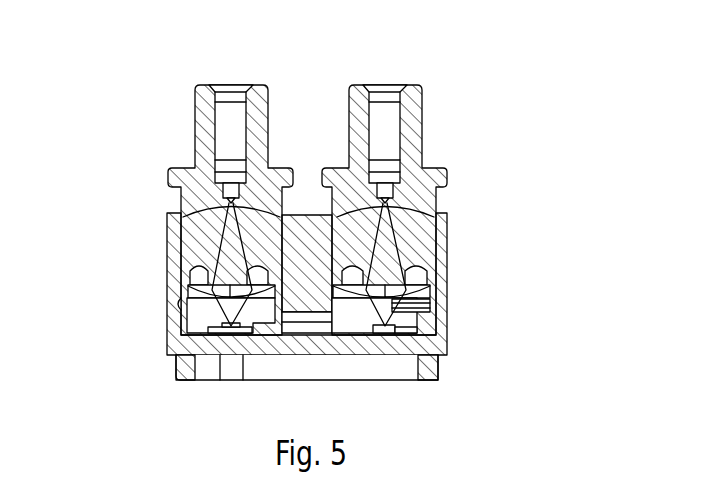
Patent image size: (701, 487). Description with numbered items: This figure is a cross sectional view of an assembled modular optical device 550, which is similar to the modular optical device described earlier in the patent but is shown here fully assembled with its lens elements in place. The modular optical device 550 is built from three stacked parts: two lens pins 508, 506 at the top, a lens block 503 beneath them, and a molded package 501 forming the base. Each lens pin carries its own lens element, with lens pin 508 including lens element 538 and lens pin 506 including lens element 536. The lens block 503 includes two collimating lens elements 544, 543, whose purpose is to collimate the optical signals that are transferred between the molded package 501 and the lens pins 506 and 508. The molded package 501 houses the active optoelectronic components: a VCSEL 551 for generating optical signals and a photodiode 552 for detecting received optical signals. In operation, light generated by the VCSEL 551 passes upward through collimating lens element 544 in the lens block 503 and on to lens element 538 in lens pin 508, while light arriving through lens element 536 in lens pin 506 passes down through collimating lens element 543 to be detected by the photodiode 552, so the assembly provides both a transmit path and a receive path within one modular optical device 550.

The modular optical device 550 is at (106, 107).
The lens pin 508 is at (268, 112).
The lens pin 506 is at (422, 112).
The lens block 503 is at (447, 237).
The molded package 501 is at (437, 365).
The lens element 538 is at (180, 212).
The lens element 536 is at (397, 213).
The collimating lens element 544 is at (183, 297).
The collimating lens element 543 is at (432, 302).
The VCSEL 551 is at (225, 328).
The photodiode 552 is at (385, 330).